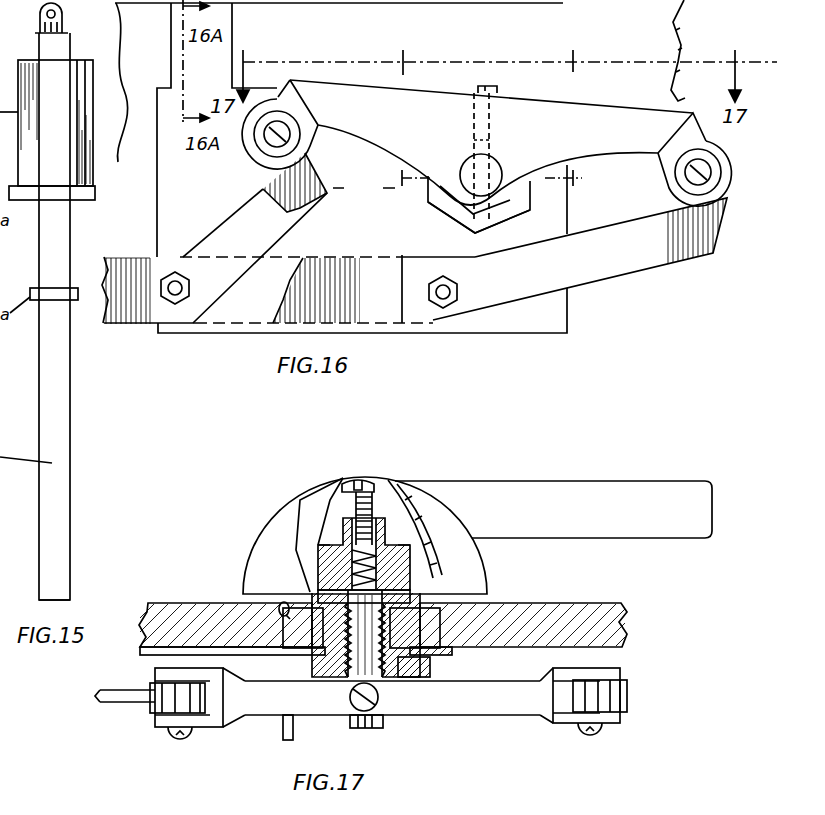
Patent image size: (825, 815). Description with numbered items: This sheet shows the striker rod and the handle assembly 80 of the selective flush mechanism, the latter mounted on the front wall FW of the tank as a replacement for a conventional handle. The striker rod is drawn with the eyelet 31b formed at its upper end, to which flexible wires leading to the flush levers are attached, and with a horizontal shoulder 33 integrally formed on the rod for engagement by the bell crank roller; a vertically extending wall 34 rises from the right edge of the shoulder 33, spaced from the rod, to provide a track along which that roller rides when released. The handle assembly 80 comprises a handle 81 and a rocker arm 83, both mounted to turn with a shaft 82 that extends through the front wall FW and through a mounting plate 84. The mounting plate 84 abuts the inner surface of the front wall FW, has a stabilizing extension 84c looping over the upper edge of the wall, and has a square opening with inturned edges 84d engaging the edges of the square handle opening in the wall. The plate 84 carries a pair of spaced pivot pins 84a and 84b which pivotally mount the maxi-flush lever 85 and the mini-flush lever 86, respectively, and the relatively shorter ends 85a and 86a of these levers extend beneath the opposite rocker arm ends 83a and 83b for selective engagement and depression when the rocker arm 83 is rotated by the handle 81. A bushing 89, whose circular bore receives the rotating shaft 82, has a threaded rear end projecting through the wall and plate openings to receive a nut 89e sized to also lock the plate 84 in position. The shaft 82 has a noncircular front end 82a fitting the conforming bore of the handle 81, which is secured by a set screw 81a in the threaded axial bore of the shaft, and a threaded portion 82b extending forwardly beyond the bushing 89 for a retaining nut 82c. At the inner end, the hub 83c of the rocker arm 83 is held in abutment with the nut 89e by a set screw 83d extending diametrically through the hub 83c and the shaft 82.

In FIG. 15, the eyelet 31b is at (56, 15).
In FIG. 15, the horizontal shoulder 33 is at (72, 195).
In FIG. 15, the vertically extending wall 34 is at (88, 90).
In FIG. 17, the handle assembly 80 is at (243, 543).
In FIG. 17, the handle 81 is at (483, 490).
In FIG. 17, the set screw 81a is at (351, 482).
In FIG. 16, the shaft 82 is at (485, 163).
In FIG. 17, the shaft 82 is at (350, 617).
In FIG. 17, the front end of shaft 82a is at (410, 532).
In FIG. 17, the threaded portion of shaft 82b is at (418, 573).
In FIG. 17, the retaining nut 82c is at (335, 577).
In FIG. 16, the rocker arm 83 is at (595, 123).
In FIG. 17, the rocker arm 83 is at (495, 698).
In FIG. 16, the rocker arm end 83a is at (278, 97).
In FIG. 17, the rocker arm end 83a is at (217, 722).
In FIG. 16, the rocker arm end 83b is at (698, 117).
In FIG. 17, the rocker arm end 83b is at (560, 717).
In FIG. 16, the hub of rocker arm 83c is at (498, 195).
In FIG. 16, the set screw 83d is at (478, 140).
In FIG. 17, the set screw 83d is at (372, 704).
In FIG. 16, the mounting plate 84 is at (334, 256).
In FIG. 17, the mounting plate 84 is at (173, 653).
In FIG. 16, the pivot pin 84a is at (175, 295).
In FIG. 16, the pivot pin 84b is at (445, 307).
In FIG. 16, the stabilizing extension 84c is at (234, 18).
In FIG. 17, the inturned edges 84d is at (305, 655).
In FIG. 17, the maxi-flush lever 85 is at (118, 701).
In FIG. 16, the shorter end of maxi-flush lever 85a is at (265, 237).
In FIG. 17, the mini-flush lever 86 is at (293, 731).
In FIG. 16, the shorter end of mini-flush lever 86a is at (612, 262).
In FIG. 17, the bushing 89 is at (407, 625).
In FIG. 16, the nut 89e is at (460, 213).
In FIG. 17, the nut 89e is at (433, 663).
In FIG. 16, the front wall of tank FW is at (625, 33).
In FIG. 17, the front wall of tank FW is at (552, 603).